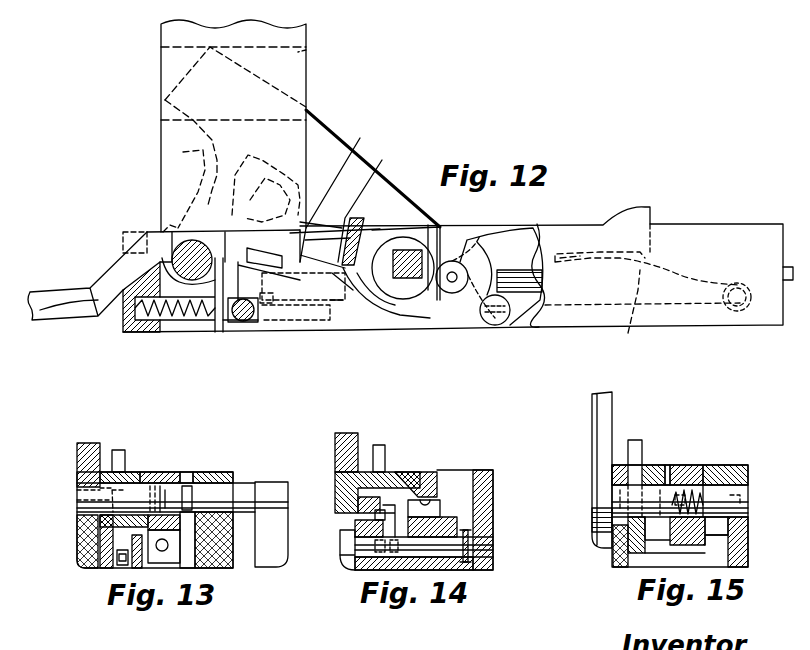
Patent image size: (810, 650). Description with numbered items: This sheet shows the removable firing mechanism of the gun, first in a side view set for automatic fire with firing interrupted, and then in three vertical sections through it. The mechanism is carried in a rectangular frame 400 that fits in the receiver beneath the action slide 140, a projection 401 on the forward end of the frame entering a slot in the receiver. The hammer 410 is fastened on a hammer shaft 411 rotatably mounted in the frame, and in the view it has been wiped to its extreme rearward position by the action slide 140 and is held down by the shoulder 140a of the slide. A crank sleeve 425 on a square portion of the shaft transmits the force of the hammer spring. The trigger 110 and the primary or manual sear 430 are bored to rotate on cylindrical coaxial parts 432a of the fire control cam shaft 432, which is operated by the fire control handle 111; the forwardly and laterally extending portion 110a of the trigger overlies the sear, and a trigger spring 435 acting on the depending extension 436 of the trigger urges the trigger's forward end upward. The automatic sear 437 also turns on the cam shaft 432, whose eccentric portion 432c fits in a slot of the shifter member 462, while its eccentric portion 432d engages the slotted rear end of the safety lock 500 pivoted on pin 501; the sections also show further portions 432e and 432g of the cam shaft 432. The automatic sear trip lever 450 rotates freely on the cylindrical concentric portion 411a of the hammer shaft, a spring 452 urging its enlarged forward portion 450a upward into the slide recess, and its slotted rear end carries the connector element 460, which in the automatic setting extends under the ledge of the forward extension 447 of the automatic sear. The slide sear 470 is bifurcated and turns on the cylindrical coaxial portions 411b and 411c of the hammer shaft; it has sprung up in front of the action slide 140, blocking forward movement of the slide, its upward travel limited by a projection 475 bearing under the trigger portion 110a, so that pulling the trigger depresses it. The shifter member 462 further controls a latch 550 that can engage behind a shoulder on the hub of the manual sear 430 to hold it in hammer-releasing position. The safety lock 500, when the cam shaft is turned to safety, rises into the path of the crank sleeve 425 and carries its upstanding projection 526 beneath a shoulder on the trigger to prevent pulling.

In FIG. 12, the trigger 110 is at (75, 296).
In FIG. 13, the trigger 110 is at (157, 488).
In FIG. 14, the trigger 110 is at (428, 474).
In FIG. 12, the forwardly and laterally extending portion of the trigger 110a is at (358, 188).
In FIG. 14, the forwardly and laterally extending portion of the trigger 110a is at (410, 472).
In FIG. 13, the fire control handle 111 is at (270, 543).
In FIG. 12, the action slide 140 is at (303, 73).
In FIG. 12, the shoulder of the action slide 140a is at (306, 52).
In FIG. 12, the frame 400 is at (453, 269).
In FIG. 13, the frame 400 is at (195, 474).
In FIG. 14, the frame 400 is at (432, 472).
In FIG. 15, the frame 400 is at (730, 465).
In FIG. 12, the projection 401 is at (783, 272).
In FIG. 12, the hammer 410 is at (163, 87).
In FIG. 15, the hammer 410 is at (598, 408).
In FIG. 12, the hammer shaft 411 is at (430, 240).
In FIG. 15, the hammer shaft 411 is at (688, 485).
In FIG. 15, the cylindrical concentric portion of the hammer shaft 411a is at (625, 492).
In FIG. 15, the cylindrical coaxial portion of the hammer shaft 411b is at (655, 499).
In FIG. 15, the cylindrical coaxial portion of the hammer shaft 411c is at (722, 465).
In FIG. 12, the crank sleeve 425 is at (412, 328).
In FIG. 15, the crank sleeve 425 is at (690, 545).
In FIG. 12, the primary or manual sear 430 is at (232, 161).
In FIG. 13, the primary or manual sear 430 is at (125, 472).
In FIG. 14, the primary or manual sear 430 is at (335, 447).
In FIG. 13, the fire control cam shaft 432 is at (240, 492).
In FIG. 13, the cylindrical coaxial parts of the fire control cam shaft 432a is at (178, 490).
In FIG. 12, the eccentric portion of the fire control cam shaft 432c is at (150, 232).
In FIG. 13, the eccentric portion of the fire control cam shaft 432c is at (128, 488).
In FIG. 13, the eccentric portion of the fire control cam shaft 432d is at (190, 472).
In FIG. 13, the rod end 432e is at (85, 497).
In FIG. 13, the rod guide block 432g is at (95, 573).
In FIG. 12, the trigger spring 435 is at (175, 333).
In FIG. 12, the depending extension of the trigger 436 is at (215, 336).
In FIG. 12, the automatic sear 437 is at (165, 190).
In FIG. 13, the automatic sear 437 is at (78, 452).
In FIG. 14, the forward extension of the automatic sear 447 is at (340, 502).
In FIG. 12, the automatic sear trip lever 450 is at (490, 242).
In FIG. 15, the automatic sear trip lever 450 is at (660, 470).
In FIG. 12, the enlarged forward portion of the sear trip lever 450a is at (650, 192).
In FIG. 14, the enlarged forward portion of the sear trip lever 450a is at (380, 445).
In FIG. 15, the enlarged forward portion of the sear trip lever 450a is at (636, 440).
In FIG. 12, the spring 452 is at (640, 312).
In FIG. 12, the connector element 460 is at (687, 228).
In FIG. 12, the shifter member 462 is at (360, 312).
In FIG. 12, the slide sear 470 is at (352, 218).
In FIG. 15, the slide sear 470 is at (718, 465).
In FIG. 12, the projection on the slide sear 475 is at (374, 198).
In FIG. 14, the safety lock 500 is at (468, 515).
In FIG. 12, the pin 501 is at (243, 326).
In FIG. 14, the pin 501 is at (475, 548).
In FIG. 14, the upstanding projection on the safety lock 526 is at (440, 503).
In FIG. 14, the latch 550 is at (375, 580).